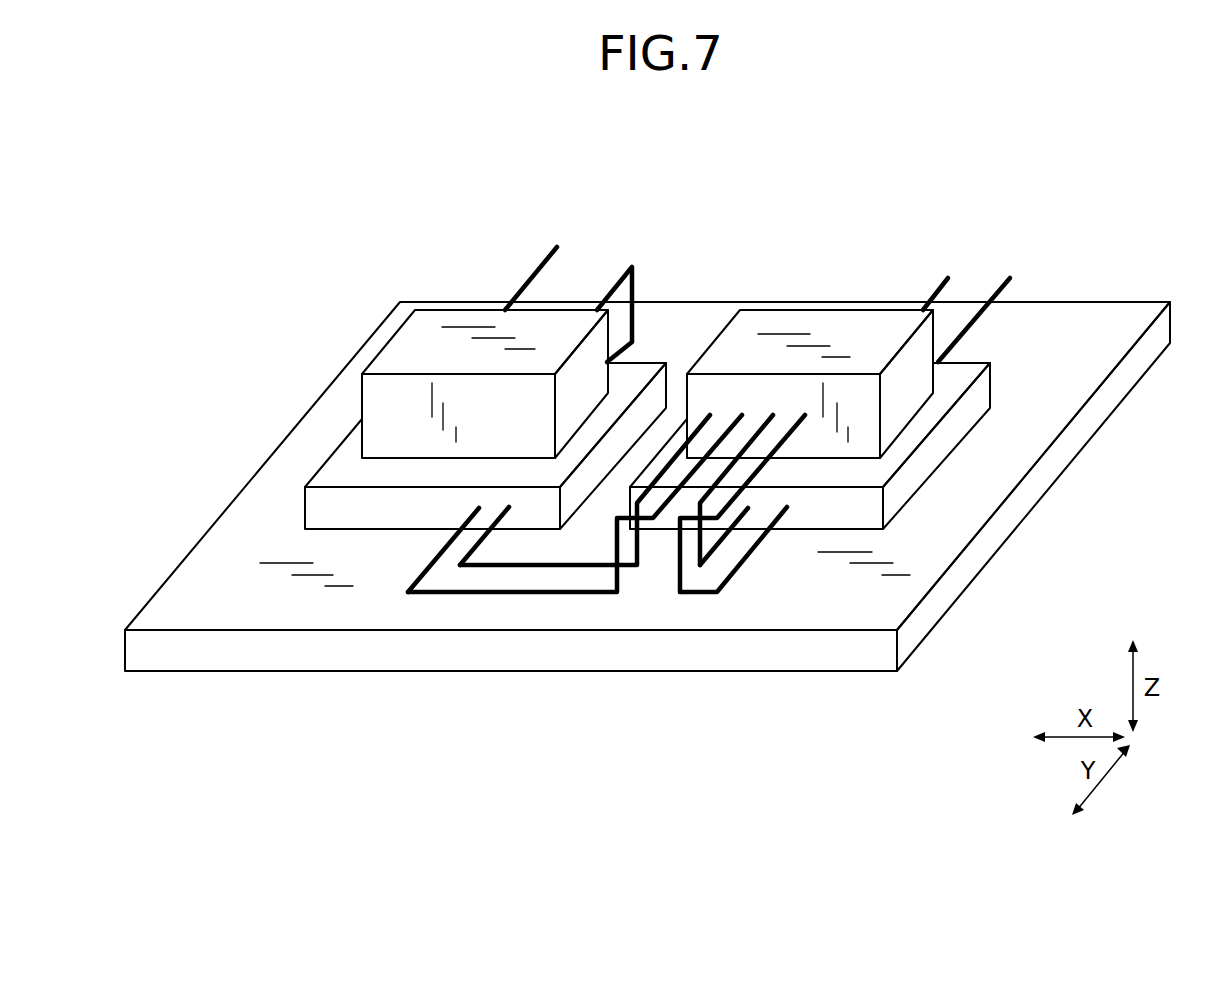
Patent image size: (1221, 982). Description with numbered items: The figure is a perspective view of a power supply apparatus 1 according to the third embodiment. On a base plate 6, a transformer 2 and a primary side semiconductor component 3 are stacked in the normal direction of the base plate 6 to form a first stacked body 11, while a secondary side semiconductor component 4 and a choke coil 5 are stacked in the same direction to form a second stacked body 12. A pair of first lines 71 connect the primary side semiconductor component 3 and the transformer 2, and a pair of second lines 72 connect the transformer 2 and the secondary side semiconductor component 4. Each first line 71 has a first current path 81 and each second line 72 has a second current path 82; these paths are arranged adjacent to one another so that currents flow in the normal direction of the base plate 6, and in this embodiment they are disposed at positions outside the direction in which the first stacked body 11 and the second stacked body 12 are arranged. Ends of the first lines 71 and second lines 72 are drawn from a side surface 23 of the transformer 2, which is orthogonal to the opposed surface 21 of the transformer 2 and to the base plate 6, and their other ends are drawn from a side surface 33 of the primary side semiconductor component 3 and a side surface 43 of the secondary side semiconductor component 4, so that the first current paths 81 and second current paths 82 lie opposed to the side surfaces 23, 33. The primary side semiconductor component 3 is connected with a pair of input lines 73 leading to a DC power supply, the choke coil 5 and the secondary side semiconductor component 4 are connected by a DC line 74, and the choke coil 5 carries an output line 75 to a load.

The power supply apparatus 1 is at (977, 193).
The first stacked body 11 is at (868, 290).
The second stacked body 12 is at (465, 300).
The transformer 2 is at (838, 320).
The opposed surface 21 is at (720, 332).
The side surface 23 is at (738, 387).
The primary side semiconductor component 3 is at (960, 418).
The side surface 33 is at (848, 513).
The secondary side semiconductor component 4 is at (343, 473).
The side surface 43 is at (322, 517).
The choke coil 5 is at (410, 353).
The base plate 6 is at (1093, 367).
The first line 71 is at (742, 563).
The second line 72 is at (423, 593).
The input line 73 is at (1013, 285).
The DC line 74 is at (610, 290).
The output line 75 is at (530, 272).
The first current path 81 is at (700, 548).
The second current path 82 is at (634, 543).